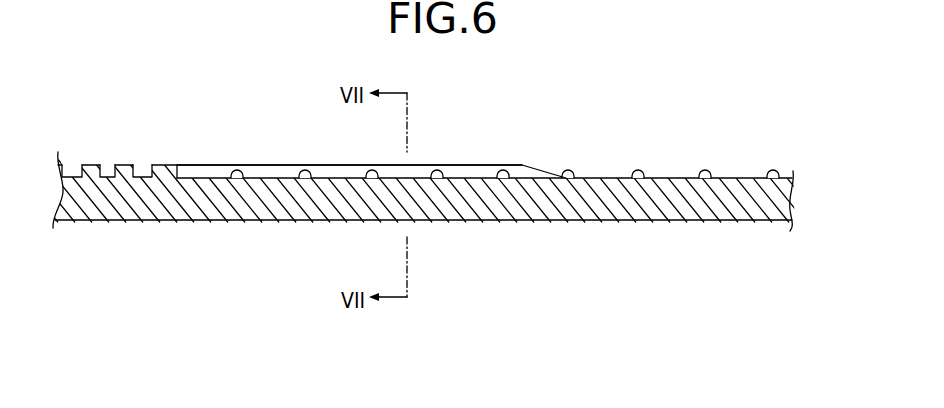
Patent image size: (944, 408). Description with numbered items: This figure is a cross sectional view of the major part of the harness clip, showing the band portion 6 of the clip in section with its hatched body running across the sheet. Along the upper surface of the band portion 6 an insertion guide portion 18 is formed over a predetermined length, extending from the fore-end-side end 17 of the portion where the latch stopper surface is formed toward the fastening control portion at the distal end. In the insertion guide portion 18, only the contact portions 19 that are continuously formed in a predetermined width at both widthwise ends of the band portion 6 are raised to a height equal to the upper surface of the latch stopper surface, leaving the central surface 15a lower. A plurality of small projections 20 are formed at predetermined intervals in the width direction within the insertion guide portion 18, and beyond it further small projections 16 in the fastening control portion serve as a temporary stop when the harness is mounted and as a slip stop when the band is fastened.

The band portion 6 is at (642, 222).
The surface of substrate 15a is at (592, 178).
The small projections 16 is at (705, 178).
The end on the fore end side of the portion where the latch stopper surface is forme 17 is at (175, 166).
The insertion guide portion 18 is at (441, 156).
The contact portions 19 is at (280, 165).
The small projections 20 is at (240, 172).